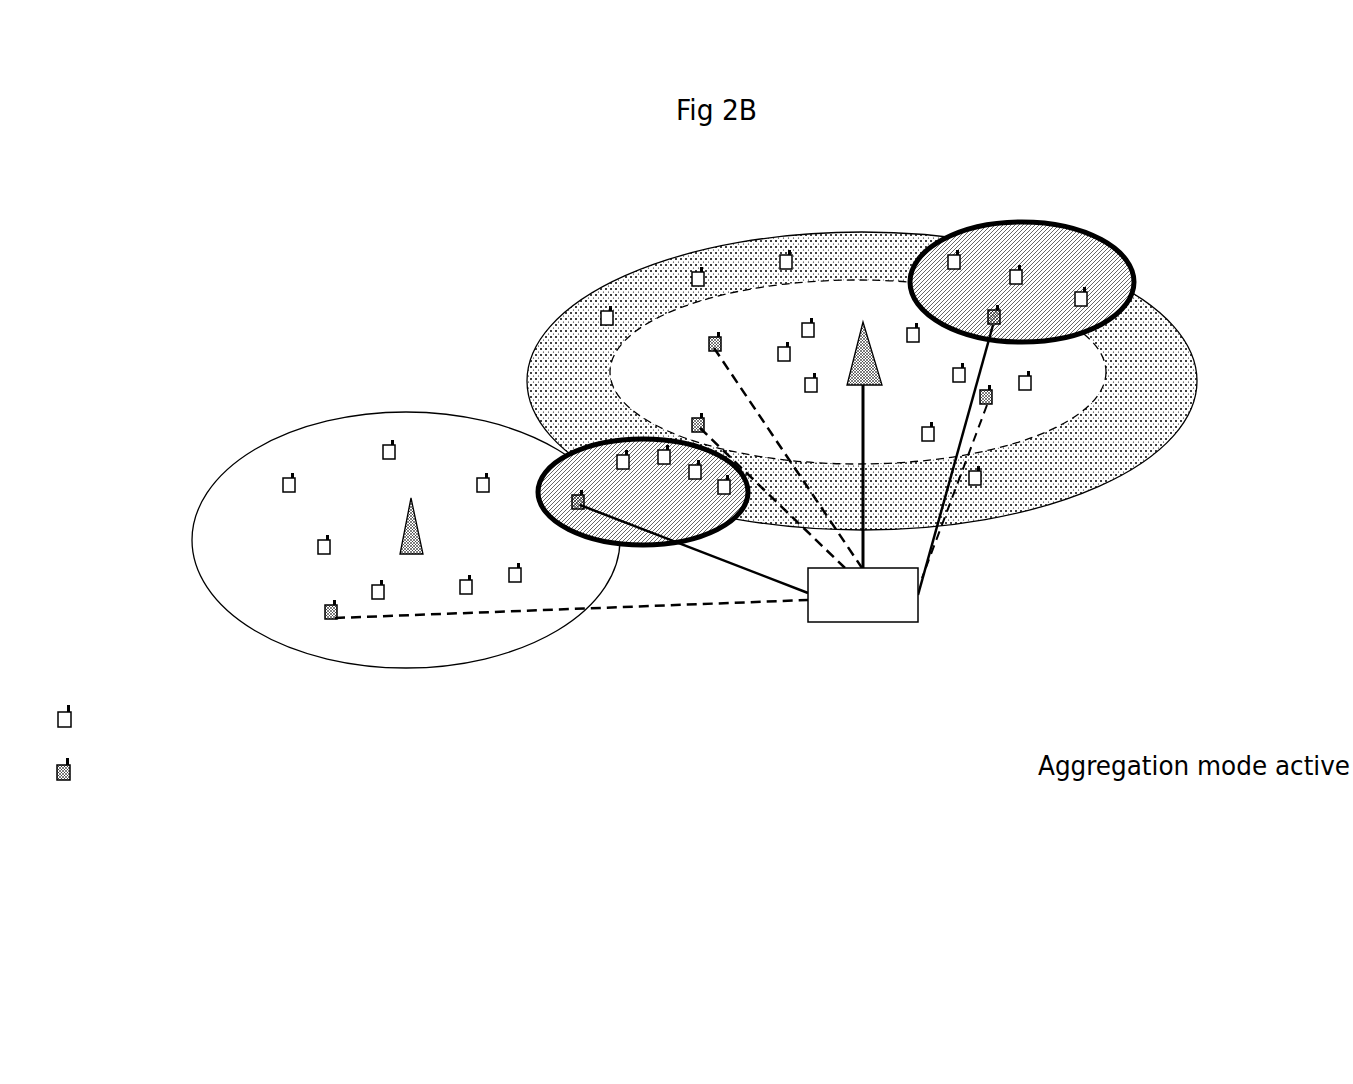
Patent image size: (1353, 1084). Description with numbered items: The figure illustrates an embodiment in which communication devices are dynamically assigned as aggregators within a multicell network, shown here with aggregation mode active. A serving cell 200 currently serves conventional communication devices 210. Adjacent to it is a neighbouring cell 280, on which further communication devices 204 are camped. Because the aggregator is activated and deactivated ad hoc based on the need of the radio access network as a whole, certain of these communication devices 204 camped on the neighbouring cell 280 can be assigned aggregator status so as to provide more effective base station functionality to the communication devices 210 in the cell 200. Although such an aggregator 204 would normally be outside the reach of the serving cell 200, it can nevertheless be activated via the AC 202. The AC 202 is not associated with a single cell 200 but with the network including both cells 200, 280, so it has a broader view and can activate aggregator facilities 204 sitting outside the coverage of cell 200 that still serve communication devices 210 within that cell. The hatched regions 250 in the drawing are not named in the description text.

The cell 200 is at (862, 381).
The AC 202 is at (863, 472).
The communication device 204 is at (528, 544).
The conventional communication device 210 is at (572, 490).
The aggregation cluster 250 is at (836, 383).
The neighbouring cell 280 is at (386, 540).